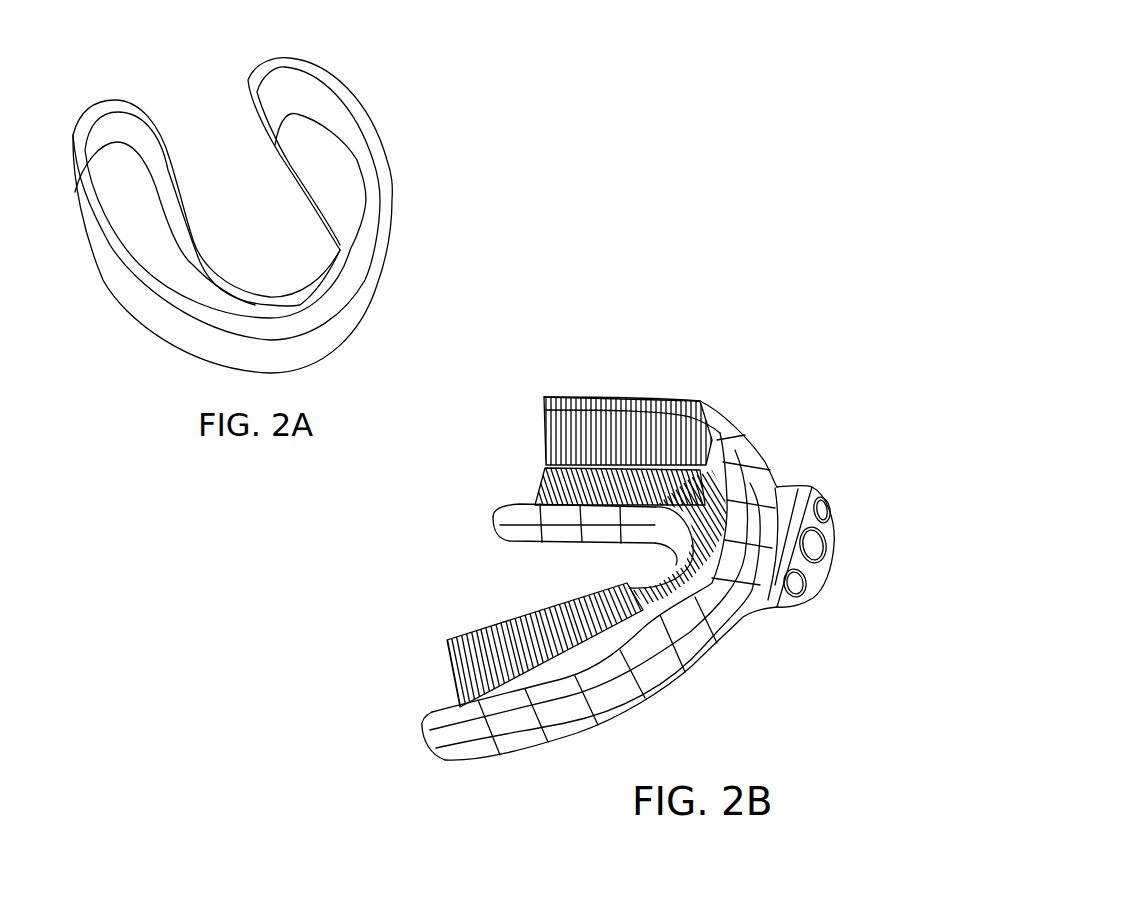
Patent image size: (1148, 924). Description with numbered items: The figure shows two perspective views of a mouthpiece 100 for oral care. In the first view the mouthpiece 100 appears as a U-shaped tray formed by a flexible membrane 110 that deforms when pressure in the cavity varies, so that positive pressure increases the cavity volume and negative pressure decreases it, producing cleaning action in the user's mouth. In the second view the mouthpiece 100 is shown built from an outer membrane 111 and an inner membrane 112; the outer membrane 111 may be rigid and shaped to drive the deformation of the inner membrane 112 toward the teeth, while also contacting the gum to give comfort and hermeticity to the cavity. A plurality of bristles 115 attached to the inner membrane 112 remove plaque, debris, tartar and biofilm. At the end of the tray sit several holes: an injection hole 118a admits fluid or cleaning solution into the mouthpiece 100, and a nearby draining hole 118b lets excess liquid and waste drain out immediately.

In FIG. 2A, the mouthpiece 100 is at (378, 53).
In FIG. 2B, the mouthpiece 100 is at (783, 360).
In FIG. 2A, the flexible membrane 110 is at (352, 107).
In FIG. 2B, the outer membrane 111 is at (671, 660).
In FIG. 2B, the inner membrane 112 is at (558, 463).
In FIG. 2B, the bristles 115 is at (572, 412).
In FIG. 2B, the injection hole 118a is at (826, 511).
In FIG. 2B, the draining hole 118b is at (816, 547).